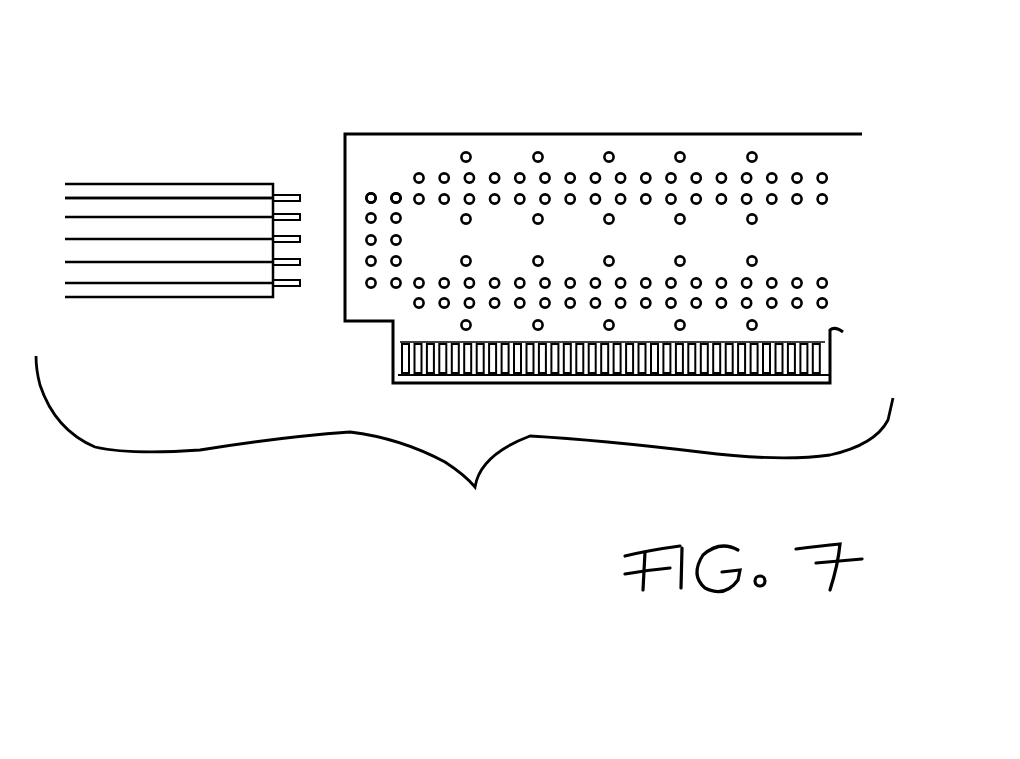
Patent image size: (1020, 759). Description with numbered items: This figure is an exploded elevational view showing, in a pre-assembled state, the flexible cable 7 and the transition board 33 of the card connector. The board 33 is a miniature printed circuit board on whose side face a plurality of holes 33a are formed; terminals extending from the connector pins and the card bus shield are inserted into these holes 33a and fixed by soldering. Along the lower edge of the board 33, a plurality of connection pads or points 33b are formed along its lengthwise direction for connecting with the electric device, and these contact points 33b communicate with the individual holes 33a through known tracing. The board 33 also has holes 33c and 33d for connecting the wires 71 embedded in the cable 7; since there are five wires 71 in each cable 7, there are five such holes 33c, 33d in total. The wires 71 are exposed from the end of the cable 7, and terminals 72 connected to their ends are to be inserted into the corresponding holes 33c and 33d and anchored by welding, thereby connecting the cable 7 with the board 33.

The flexible cable 7 is at (154, 183).
The wires 71 is at (92, 197).
The terminals 72 is at (286, 192).
The transition board 33 is at (812, 145).
The holes 33a is at (684, 150).
The connection pads or points 33b is at (402, 363).
The holes 33c is at (397, 195).
The holes 33d is at (371, 195).